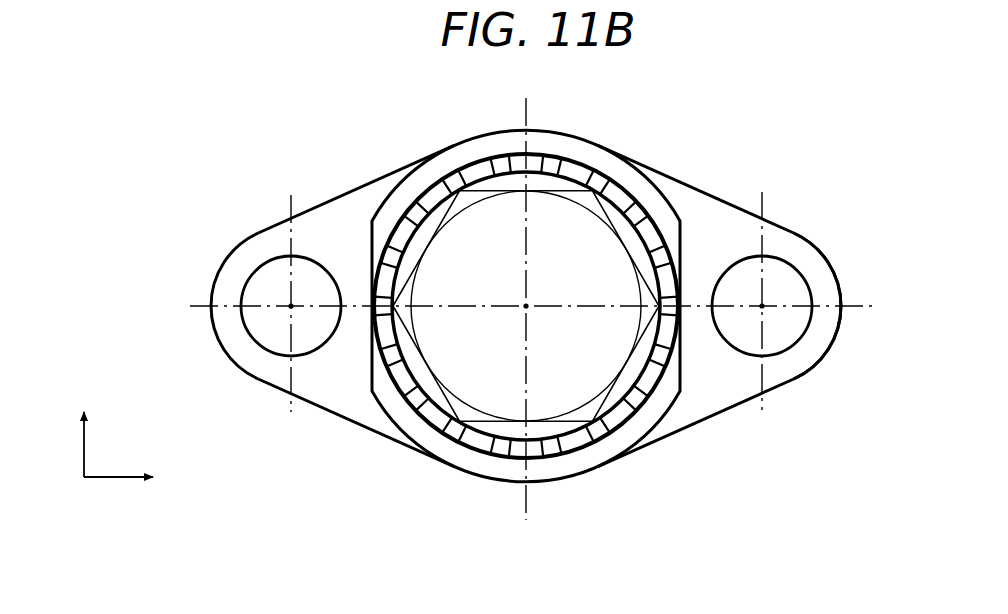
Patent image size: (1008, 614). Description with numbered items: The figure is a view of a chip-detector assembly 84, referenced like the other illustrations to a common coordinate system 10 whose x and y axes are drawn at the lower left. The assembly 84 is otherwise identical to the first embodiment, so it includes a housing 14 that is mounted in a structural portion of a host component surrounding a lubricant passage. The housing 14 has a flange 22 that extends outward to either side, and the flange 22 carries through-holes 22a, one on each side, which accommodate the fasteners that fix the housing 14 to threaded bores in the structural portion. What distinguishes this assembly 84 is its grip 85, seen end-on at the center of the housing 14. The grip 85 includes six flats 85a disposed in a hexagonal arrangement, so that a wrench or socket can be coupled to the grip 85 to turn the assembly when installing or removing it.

The coordinate system 10 is at (112, 478).
The housing 14 is at (246, 394).
The flange 22 is at (828, 355).
The through-holes 22a is at (785, 280).
The chip-detector assembly 84 is at (285, 125).
The grip 85 is at (643, 228).
The flats 85a is at (546, 168).